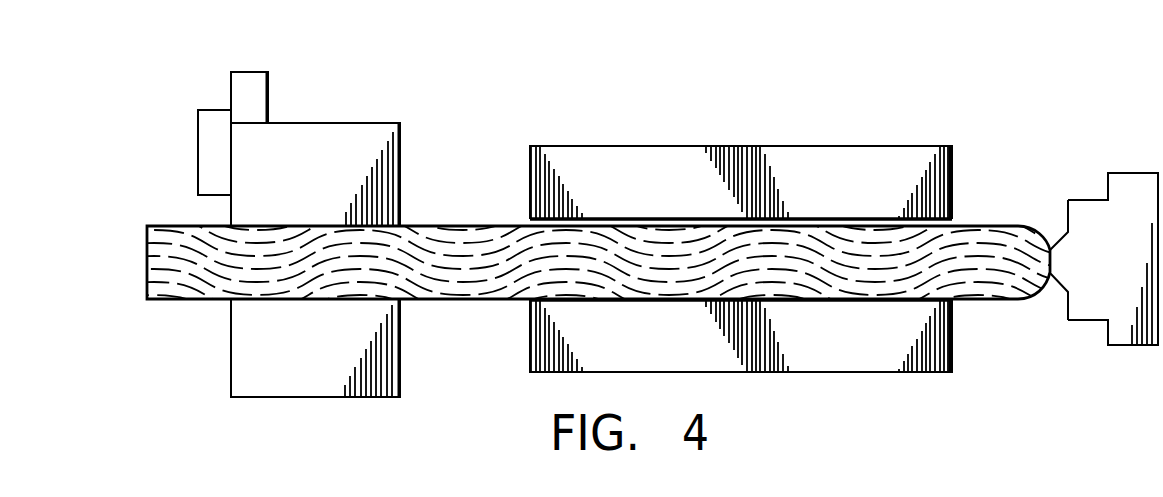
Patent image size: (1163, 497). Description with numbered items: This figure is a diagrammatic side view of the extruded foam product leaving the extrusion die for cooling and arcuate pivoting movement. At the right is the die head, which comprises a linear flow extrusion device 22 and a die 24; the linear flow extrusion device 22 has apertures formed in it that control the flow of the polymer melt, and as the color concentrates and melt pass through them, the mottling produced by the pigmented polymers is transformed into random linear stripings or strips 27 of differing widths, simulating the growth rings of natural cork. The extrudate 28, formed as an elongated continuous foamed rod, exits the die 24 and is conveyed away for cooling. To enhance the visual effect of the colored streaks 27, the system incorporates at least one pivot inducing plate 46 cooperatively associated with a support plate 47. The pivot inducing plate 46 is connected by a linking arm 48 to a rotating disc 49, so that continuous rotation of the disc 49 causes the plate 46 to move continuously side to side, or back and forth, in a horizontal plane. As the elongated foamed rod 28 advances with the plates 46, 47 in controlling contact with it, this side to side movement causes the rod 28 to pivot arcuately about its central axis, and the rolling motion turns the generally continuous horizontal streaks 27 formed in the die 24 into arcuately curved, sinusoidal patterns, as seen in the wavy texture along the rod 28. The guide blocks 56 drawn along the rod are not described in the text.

The linear flow extrusion device 22 is at (1081, 282).
The die 24 is at (1058, 237).
The colored strips or streaks 27 is at (508, 272).
The extrudate or elongated foamed rod 28 is at (566, 268).
The pivot inducing plate 46 is at (318, 147).
The support plate 47 is at (263, 367).
The linking arm 48 is at (197, 143).
The rotating disc 49 is at (250, 90).
The guide blocks 56 is at (637, 167).